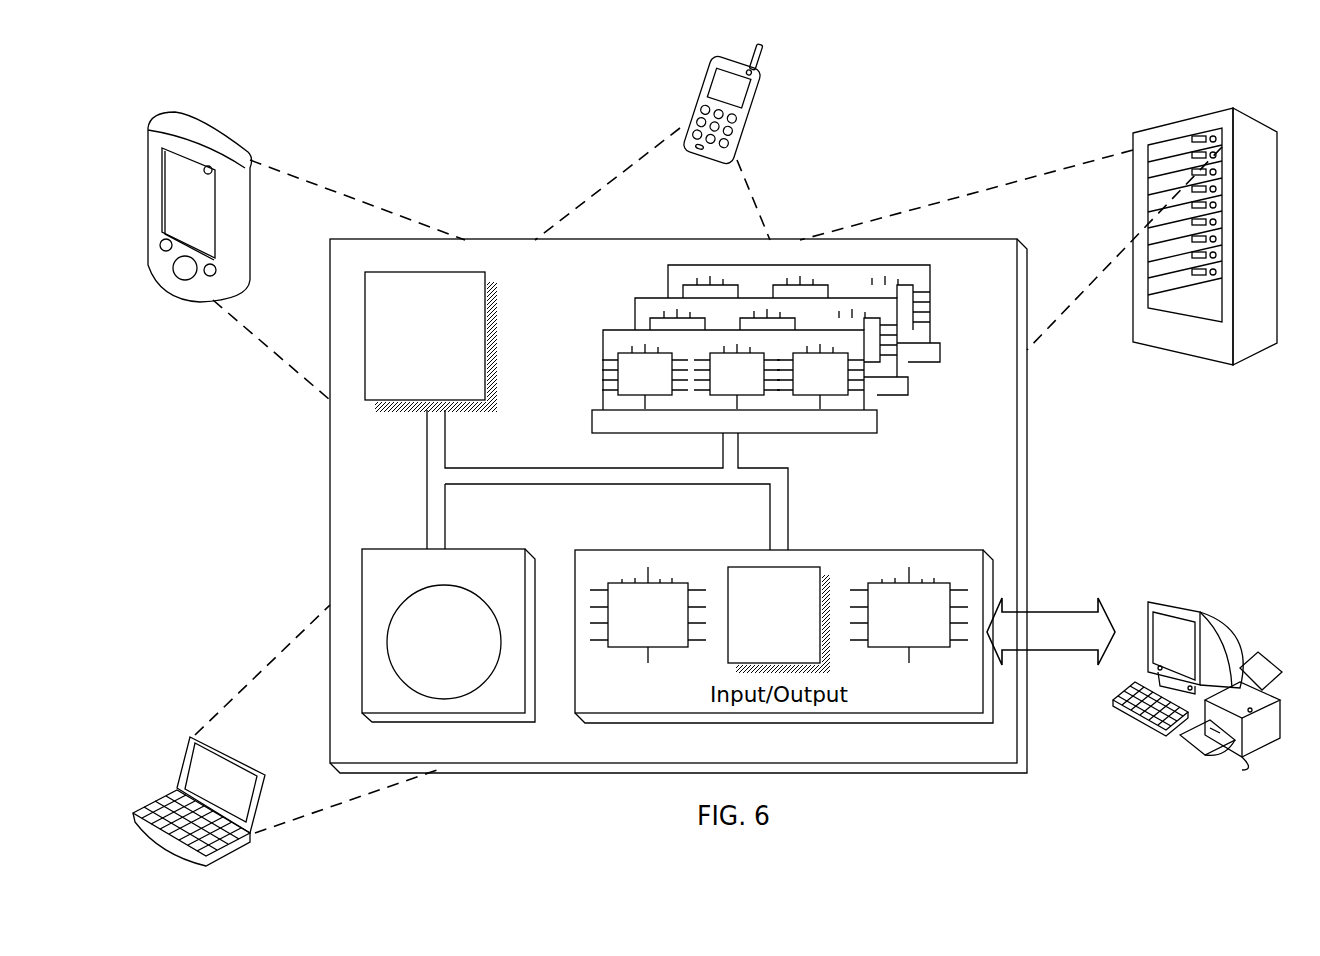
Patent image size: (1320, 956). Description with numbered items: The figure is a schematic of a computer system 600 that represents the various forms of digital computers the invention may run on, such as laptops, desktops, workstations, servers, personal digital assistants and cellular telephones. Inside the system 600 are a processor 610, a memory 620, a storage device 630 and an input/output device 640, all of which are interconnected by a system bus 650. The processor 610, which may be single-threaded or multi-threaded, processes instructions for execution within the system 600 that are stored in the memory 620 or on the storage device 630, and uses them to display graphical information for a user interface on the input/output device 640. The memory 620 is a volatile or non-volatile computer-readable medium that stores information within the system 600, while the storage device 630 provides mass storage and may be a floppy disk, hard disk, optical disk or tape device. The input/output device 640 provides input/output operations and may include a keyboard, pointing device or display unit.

The computer system 600 is at (578, 112).
The processor 610 is at (455, 380).
The memory 620 is at (935, 398).
The storage device 630 is at (525, 708).
The input/output device 640 is at (1148, 608).
The system bus 650 is at (607, 486).